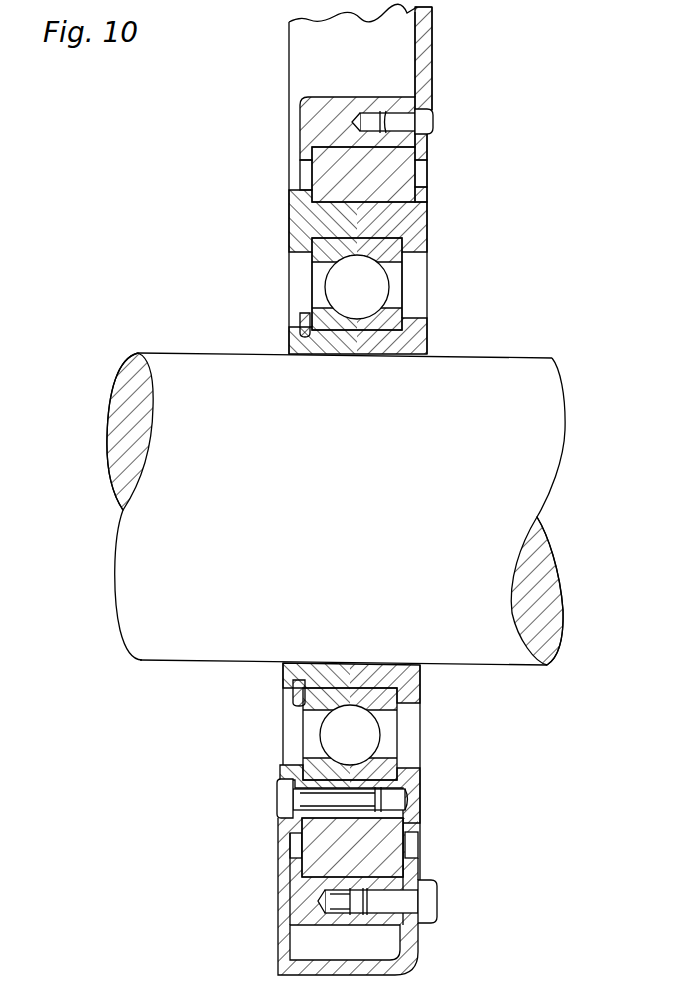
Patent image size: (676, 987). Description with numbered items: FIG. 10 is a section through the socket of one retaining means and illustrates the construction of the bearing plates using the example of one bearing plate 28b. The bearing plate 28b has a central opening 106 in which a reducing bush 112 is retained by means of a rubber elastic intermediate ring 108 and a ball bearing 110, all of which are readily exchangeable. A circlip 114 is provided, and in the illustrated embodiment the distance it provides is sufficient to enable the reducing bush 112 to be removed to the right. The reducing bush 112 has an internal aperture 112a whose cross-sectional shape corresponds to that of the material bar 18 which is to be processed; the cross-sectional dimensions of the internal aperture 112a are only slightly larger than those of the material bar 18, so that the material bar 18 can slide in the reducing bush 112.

The bearing plate 28b is at (436, 78).
The central opening 106 is at (427, 178).
The material bar 18 is at (485, 372).
The internal aperture 112a is at (313, 355).
The circlip 114 is at (296, 691).
The reducing bush 112 is at (405, 693).
The ball bearing 110 is at (400, 739).
The rubber elastic intermediate ring 108 is at (378, 848).